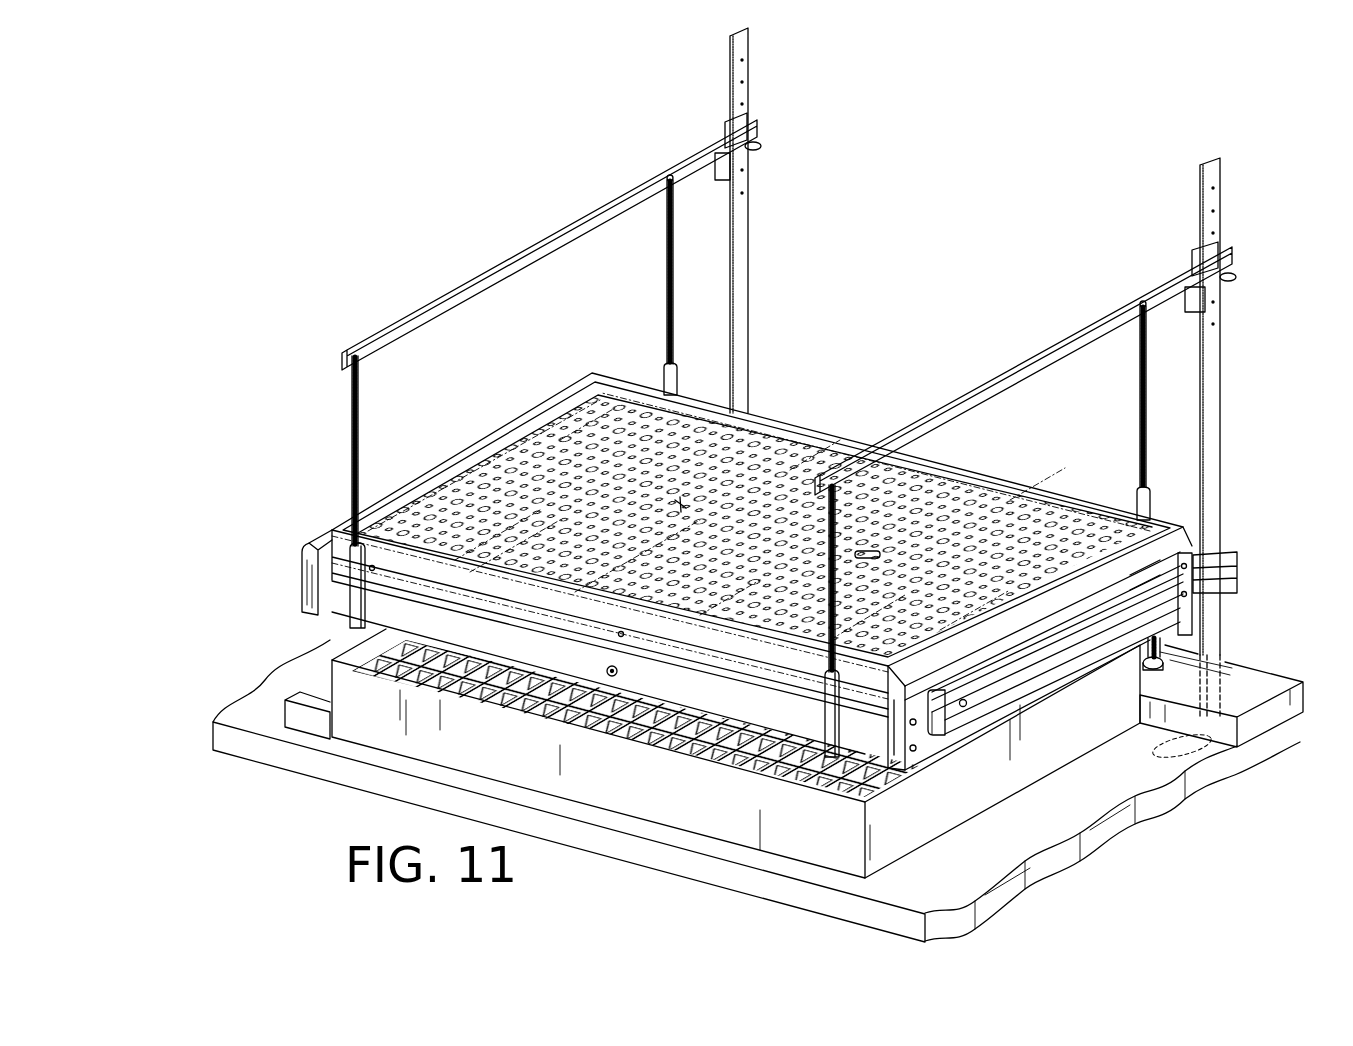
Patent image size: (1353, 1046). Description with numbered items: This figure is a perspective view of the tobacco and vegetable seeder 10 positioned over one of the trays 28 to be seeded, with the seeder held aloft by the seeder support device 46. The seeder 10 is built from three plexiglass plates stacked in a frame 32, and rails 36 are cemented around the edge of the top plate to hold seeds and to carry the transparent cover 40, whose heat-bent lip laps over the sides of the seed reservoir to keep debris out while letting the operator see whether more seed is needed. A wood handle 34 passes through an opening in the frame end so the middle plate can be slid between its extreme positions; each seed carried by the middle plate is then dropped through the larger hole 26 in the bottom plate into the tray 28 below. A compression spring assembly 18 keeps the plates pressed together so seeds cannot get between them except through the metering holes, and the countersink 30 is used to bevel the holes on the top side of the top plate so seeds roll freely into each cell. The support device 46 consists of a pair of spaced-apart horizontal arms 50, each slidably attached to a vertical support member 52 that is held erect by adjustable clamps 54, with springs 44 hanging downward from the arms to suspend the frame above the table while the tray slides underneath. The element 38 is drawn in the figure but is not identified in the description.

The tobacco and vegetable seeder 10 is at (1245, 356).
The compression spring assembly 18 is at (679, 503).
The larger hole in the bottom plate 26 is at (745, 455).
The trays 28 is at (613, 776).
The countersink 30 is at (806, 472).
The frame 32 is at (303, 524).
The wood handle 34 is at (511, 418).
The rails 36 is at (342, 600).
The slide rail 38 is at (1222, 522).
The transparent cover 40 is at (781, 424).
The spring 44 is at (358, 420).
The seeder support device 46 is at (618, 180).
The horizontal arms 50 is at (515, 262).
The vertical support member 52 is at (1218, 455).
The adjustable clamps 54 is at (1233, 592).